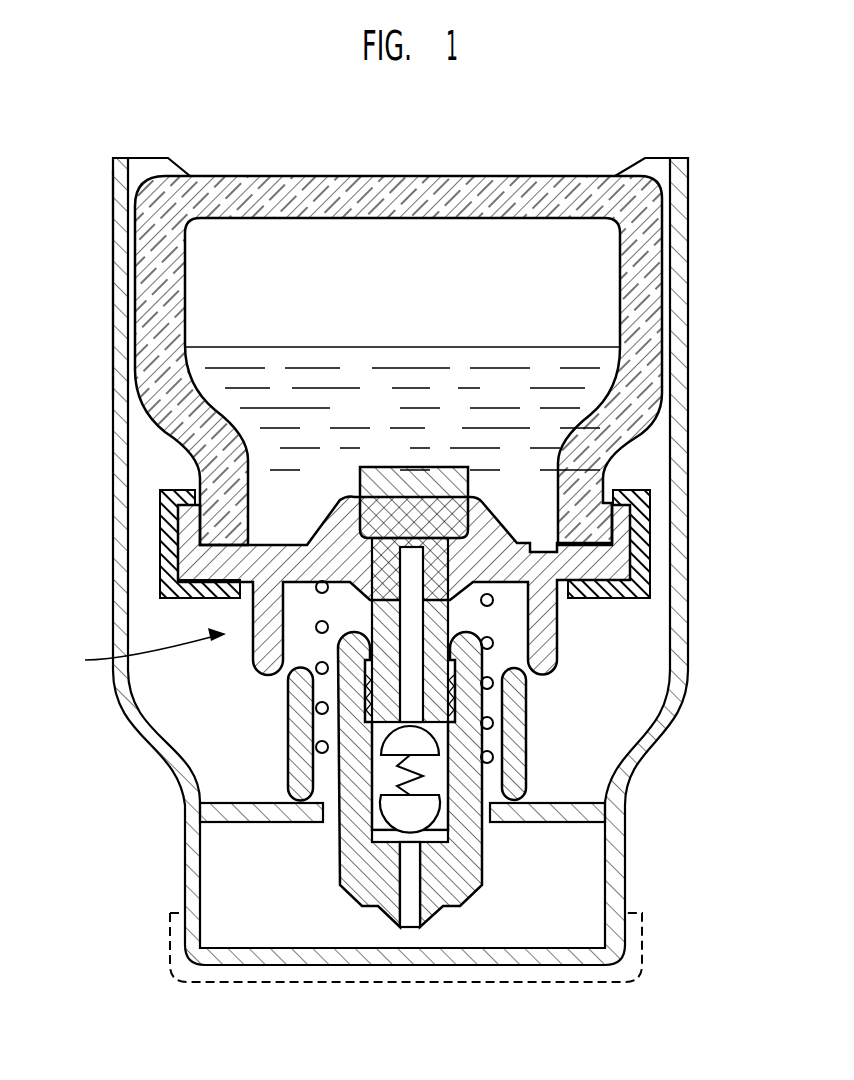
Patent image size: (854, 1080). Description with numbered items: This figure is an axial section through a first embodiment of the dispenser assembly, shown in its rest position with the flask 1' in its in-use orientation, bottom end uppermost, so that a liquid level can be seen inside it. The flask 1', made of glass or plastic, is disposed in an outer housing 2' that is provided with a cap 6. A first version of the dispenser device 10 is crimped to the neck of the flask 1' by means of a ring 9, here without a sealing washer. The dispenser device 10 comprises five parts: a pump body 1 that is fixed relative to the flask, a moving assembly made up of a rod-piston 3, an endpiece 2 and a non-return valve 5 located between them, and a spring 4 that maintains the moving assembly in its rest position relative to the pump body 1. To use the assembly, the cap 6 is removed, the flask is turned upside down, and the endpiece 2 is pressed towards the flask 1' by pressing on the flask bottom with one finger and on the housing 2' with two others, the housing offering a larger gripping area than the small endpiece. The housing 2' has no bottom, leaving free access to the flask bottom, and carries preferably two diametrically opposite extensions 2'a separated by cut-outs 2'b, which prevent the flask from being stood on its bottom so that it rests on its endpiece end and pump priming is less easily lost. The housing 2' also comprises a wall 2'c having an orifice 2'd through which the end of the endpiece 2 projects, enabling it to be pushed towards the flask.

The pump body 1 is at (455, 585).
The flask 1' is at (360, 360).
The endpiece 2 is at (400, 598).
The outer housing 2' is at (87, 285).
The extensions 2'a is at (400, 139).
The cut-outs 2'b is at (402, 295).
The wall 2'c is at (362, 842).
The orifice 2'd is at (389, 788).
The rod-piston 3 is at (450, 490).
The spring 4 is at (490, 632).
The non-return valve 5 is at (432, 805).
The cap 6 is at (210, 975).
The ring 9 is at (175, 592).
The dispenser device 10 is at (140, 651).